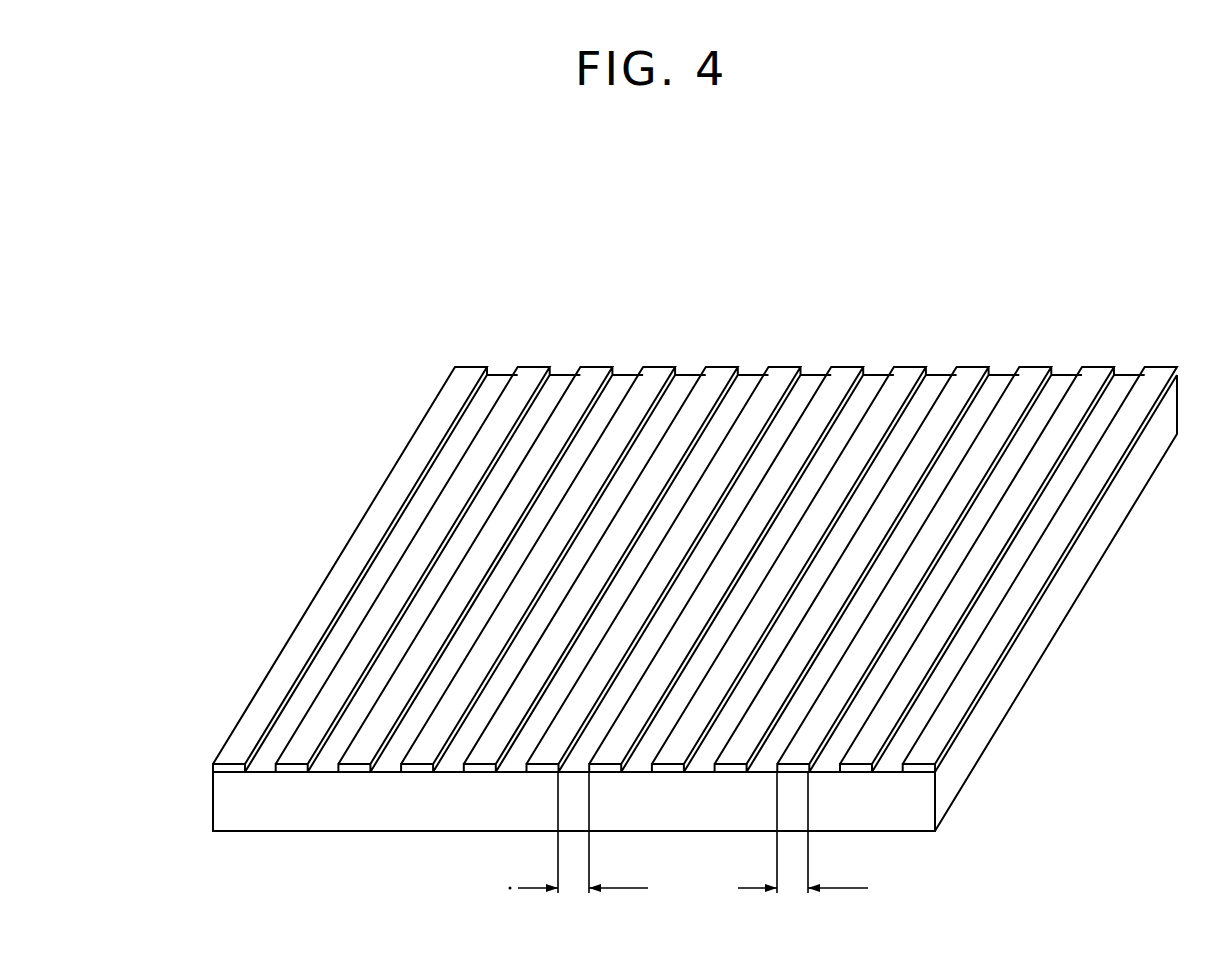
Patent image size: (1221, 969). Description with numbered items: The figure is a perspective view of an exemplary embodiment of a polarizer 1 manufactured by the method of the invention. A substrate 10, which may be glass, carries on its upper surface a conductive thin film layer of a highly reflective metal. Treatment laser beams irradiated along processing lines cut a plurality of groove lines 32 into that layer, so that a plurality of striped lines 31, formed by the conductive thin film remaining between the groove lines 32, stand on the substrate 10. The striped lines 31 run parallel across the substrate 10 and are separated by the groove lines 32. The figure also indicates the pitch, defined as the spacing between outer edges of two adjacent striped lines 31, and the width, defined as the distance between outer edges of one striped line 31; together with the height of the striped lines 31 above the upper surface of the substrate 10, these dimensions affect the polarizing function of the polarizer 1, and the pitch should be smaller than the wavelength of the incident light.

The polarizer 1 is at (795, 287).
The substrate 10 is at (230, 797).
The striped lines 31 is at (302, 757).
The groove lines 32 is at (337, 757).